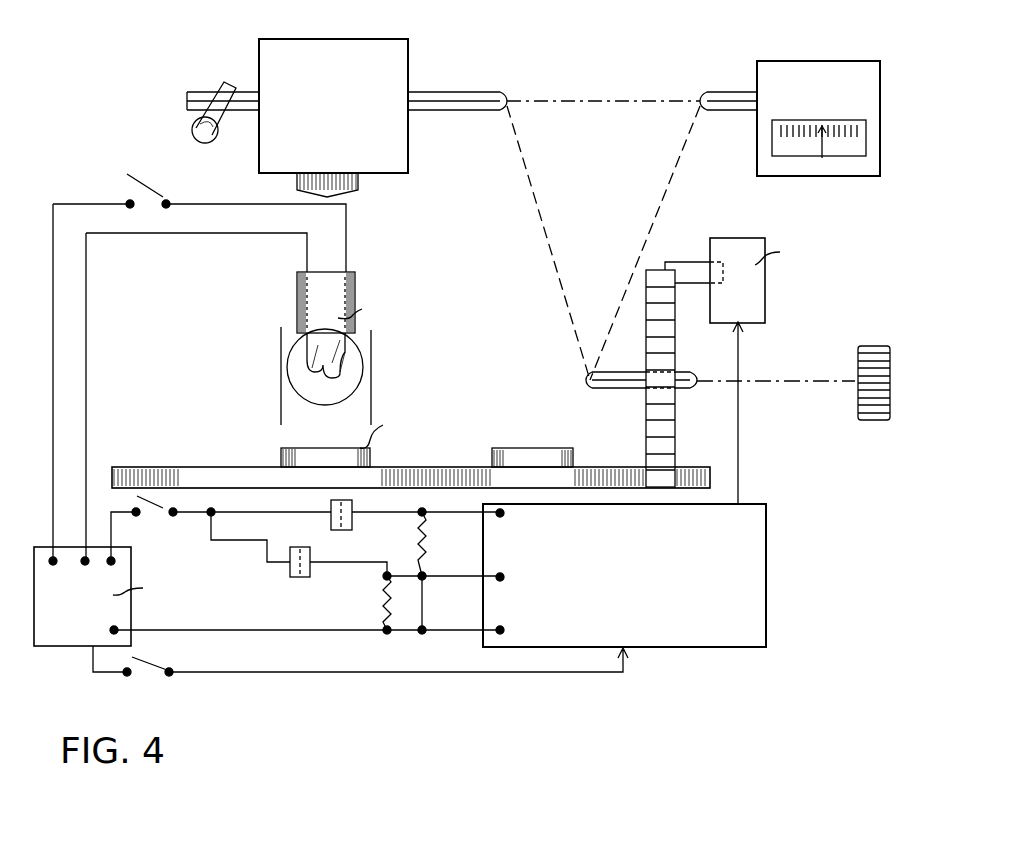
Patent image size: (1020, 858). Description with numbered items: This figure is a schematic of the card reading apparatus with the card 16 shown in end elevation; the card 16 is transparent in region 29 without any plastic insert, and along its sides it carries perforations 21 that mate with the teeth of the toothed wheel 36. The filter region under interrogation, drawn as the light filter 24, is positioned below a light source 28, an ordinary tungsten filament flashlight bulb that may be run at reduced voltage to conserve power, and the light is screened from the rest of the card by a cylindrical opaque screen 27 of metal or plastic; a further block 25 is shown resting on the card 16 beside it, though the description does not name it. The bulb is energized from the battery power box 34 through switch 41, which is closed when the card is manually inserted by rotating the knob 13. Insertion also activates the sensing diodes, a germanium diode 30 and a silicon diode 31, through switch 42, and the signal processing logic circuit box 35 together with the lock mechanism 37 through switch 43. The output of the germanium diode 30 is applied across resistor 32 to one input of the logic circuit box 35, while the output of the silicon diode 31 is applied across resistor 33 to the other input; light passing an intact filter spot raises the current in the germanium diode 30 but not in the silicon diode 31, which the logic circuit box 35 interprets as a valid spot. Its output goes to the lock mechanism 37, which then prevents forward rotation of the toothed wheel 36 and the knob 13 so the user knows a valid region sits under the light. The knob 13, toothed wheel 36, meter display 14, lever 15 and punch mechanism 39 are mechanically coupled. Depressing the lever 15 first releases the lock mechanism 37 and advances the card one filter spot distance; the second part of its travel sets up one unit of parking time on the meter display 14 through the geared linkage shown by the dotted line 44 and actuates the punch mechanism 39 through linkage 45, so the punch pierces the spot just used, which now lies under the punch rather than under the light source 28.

The knob 13 is at (858, 366).
The meter display 14 is at (840, 150).
The lever 15 is at (192, 128).
The card 16 is at (219, 456).
The perforations 21 is at (645, 468).
The light filter 24 is at (372, 458).
The block 25 is at (492, 448).
The screen 27 is at (281, 388).
The light source 28 is at (355, 360).
The transparent region 29 is at (312, 482).
The germanium diode 30 is at (290, 577).
The silicon diode 31 is at (352, 504).
The resistor 32 is at (383, 598).
The resistor 33 is at (422, 540).
The battery power box 34 is at (66, 630).
The signal processing logic circuit box 35 is at (702, 635).
The toothed wheel 36 is at (655, 406).
The lock mechanism 37 is at (755, 308).
The punch mechanism 39 is at (393, 66).
The switch 41 is at (148, 190).
The switch 42 is at (153, 508).
The switch 43 is at (150, 672).
The geared linkage 44 is at (668, 180).
The linkage 45 is at (605, 101).